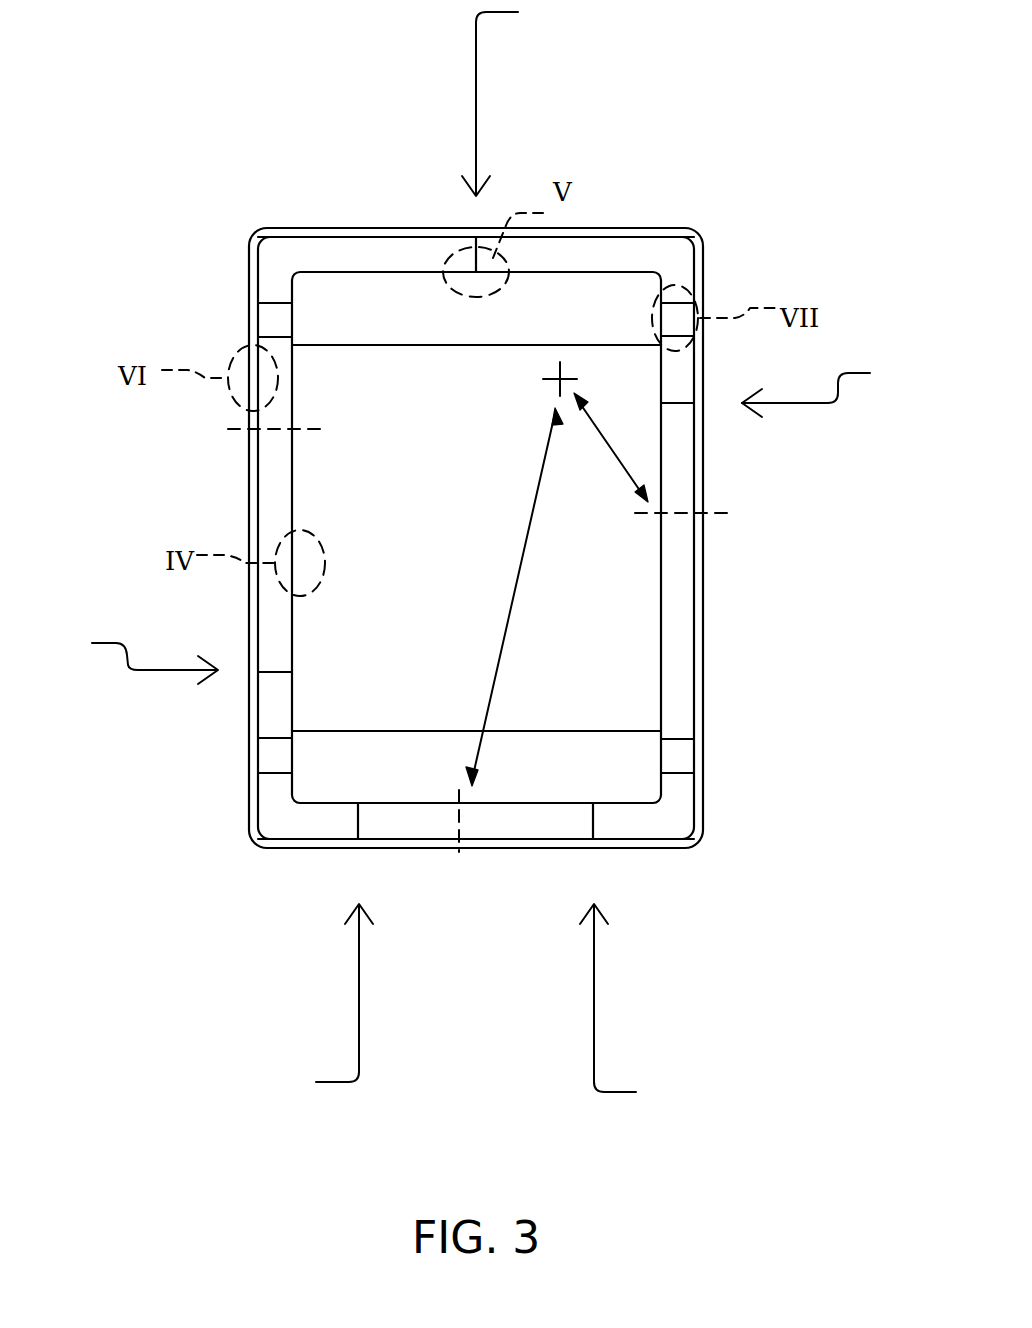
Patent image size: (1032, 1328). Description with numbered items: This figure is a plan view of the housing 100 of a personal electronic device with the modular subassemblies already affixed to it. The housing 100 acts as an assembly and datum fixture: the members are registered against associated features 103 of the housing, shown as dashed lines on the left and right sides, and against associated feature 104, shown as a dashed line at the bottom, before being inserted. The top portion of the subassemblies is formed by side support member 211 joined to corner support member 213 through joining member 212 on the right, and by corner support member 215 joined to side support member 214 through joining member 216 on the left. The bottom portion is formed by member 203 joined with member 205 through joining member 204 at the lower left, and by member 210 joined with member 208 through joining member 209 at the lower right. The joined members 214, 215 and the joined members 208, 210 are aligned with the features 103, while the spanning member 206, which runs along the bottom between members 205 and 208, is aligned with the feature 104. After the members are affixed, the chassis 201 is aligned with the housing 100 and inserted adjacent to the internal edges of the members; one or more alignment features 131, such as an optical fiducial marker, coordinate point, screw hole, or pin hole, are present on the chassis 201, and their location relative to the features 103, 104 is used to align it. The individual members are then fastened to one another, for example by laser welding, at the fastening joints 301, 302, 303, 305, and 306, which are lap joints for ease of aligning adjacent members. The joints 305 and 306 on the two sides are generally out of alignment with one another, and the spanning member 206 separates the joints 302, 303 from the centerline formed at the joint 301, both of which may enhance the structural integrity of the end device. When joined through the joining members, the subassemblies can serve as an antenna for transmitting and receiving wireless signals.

The housing 100 is at (263, 228).
The associated features 103 is at (228, 429).
The associated features 104 is at (459, 848).
The alignment features 131 is at (530, 358).
The chassis 201 is at (476, 537).
The member 203 is at (276, 724).
The joining member 204 is at (266, 762).
The member 205 is at (308, 821).
The spanning member 206 is at (475, 821).
The member 208 is at (643, 824).
The joining member 209 is at (686, 765).
The member 210 is at (677, 648).
The side support member 211 is at (686, 369).
The joining member 212 is at (688, 314).
The corner support member 213 is at (585, 251).
The side support member 214 is at (266, 500).
The corner support member 215 is at (367, 254).
The joining member 216 is at (268, 320).
The fastening joint 301 is at (514, 99).
The fastening joint 302 is at (632, 1006).
The fastening joint 303 is at (322, 1001).
The fastening joint 305 is at (830, 390).
The fastening joint 306 is at (131, 659).